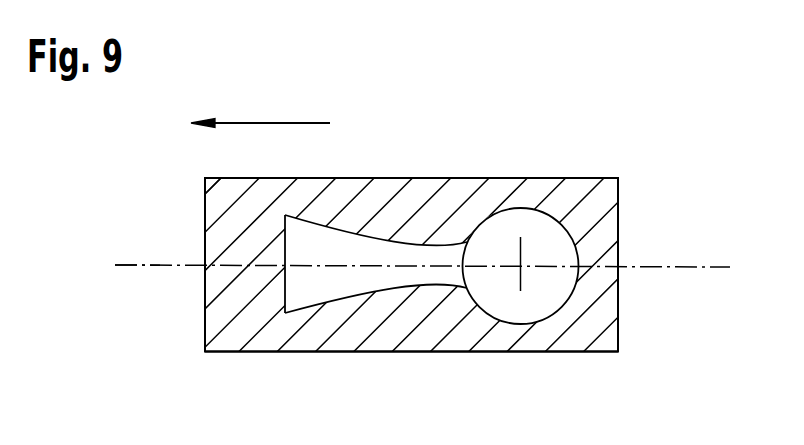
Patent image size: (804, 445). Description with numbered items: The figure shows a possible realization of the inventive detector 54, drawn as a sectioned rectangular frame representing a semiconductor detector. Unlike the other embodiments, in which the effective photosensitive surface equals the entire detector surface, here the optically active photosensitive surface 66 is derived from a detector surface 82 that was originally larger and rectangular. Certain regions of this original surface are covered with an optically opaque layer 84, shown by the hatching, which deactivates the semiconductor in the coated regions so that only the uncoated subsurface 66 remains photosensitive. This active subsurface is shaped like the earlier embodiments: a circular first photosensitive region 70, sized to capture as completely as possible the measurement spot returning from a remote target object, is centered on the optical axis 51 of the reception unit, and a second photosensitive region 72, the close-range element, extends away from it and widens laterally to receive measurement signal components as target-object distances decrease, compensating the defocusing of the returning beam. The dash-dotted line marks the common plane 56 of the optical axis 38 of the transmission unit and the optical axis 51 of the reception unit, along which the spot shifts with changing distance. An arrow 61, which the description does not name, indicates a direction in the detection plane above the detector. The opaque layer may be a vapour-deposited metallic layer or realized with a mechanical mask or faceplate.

The detector 54 is at (594, 187).
The photosensitive surface 66 is at (400, 253).
The second photosensitive region 72 is at (302, 297).
The first photosensitive region 70 is at (527, 305).
The optical axis of transmission unit 38 is at (713, 264).
The optical axis of reception unit 51 is at (521, 266).
The common plane of optical axes 56 is at (127, 266).
The detector surface 82 is at (219, 193).
The optically opaque layer 84 is at (395, 340).
The direction of movement 61 is at (289, 123).